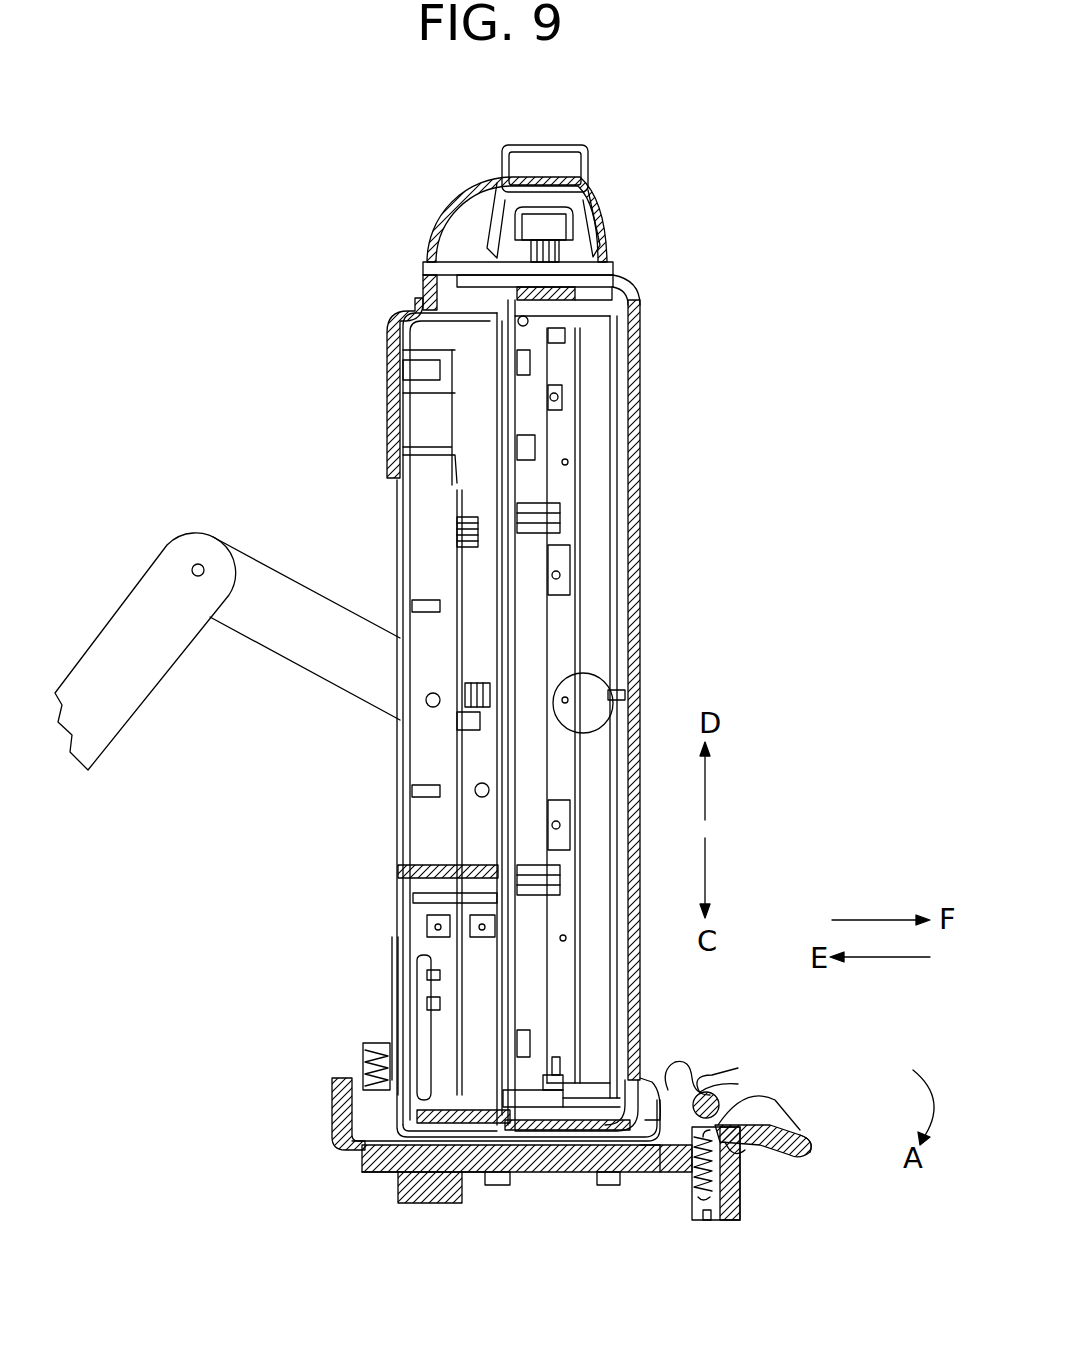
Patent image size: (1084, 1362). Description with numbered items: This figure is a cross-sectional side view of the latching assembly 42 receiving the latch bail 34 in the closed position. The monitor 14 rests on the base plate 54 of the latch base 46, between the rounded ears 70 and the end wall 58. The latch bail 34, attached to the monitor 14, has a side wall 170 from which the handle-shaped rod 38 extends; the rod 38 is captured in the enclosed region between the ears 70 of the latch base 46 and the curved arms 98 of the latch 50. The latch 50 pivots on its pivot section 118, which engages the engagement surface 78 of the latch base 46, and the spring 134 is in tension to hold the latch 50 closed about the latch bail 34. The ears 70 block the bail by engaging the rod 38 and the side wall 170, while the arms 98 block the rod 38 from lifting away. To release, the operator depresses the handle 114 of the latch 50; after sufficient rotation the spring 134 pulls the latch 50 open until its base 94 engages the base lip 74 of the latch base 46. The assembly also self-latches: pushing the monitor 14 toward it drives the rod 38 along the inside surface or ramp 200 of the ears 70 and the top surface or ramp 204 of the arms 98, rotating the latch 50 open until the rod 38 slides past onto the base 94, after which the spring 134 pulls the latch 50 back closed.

The monitor 14 is at (652, 464).
The latch bail 34 is at (661, 1082).
The rod 38 is at (703, 1093).
The latching assembly 42 is at (364, 1206).
The latch base 46 is at (528, 1180).
The latch 50 is at (797, 1128).
The base plate 54 is at (448, 1162).
The end wall 58 is at (333, 1110).
The ears 70 is at (695, 1085).
The base lip 74 is at (728, 1211).
The engagement surface 78 is at (738, 1218).
The base 94 is at (787, 1137).
The arms 98 is at (753, 1097).
The handle 114 is at (808, 1148).
The pivot section 118 is at (742, 1152).
The tensioning device or spring 134 is at (683, 1199).
The side wall 170 is at (660, 1170).
The inside surface or ramp 200 is at (681, 1086).
The top surface or ramp 204 is at (704, 1092).